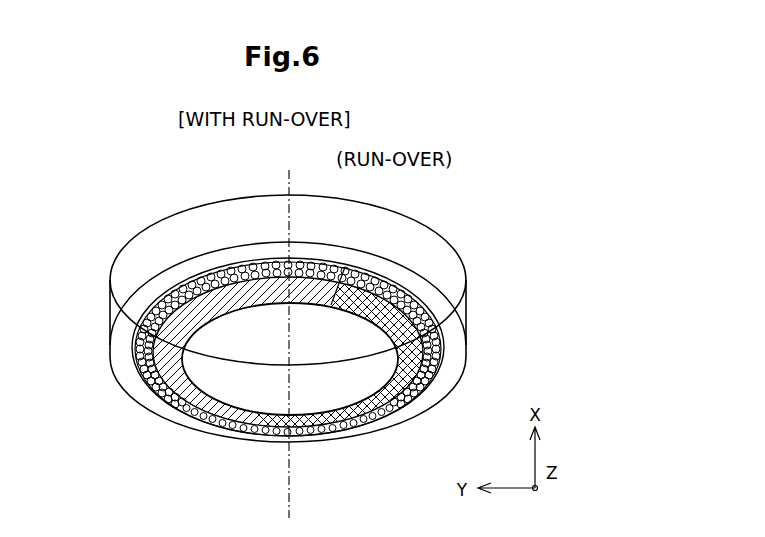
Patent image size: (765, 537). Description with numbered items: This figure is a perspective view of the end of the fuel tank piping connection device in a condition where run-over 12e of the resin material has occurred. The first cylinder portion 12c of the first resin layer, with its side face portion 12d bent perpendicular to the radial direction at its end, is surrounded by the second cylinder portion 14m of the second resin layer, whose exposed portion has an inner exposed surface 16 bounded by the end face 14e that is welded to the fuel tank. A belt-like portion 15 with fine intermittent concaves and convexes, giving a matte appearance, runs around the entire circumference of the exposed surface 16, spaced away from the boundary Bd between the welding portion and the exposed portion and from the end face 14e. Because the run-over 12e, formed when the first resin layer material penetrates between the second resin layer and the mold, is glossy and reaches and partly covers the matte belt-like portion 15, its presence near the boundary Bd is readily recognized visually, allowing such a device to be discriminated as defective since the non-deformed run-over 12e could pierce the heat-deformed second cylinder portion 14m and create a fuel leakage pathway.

The second cylinder portion 14m is at (438, 265).
The end face 14e is at (457, 352).
The boundary Bd is at (135, 307).
The first cylinder portion 12c is at (168, 291).
The side face portion 12d is at (130, 347).
The run-over 12e is at (345, 267).
The belt-like portion 15 is at (145, 400).
The exposed surface 16 is at (133, 365).